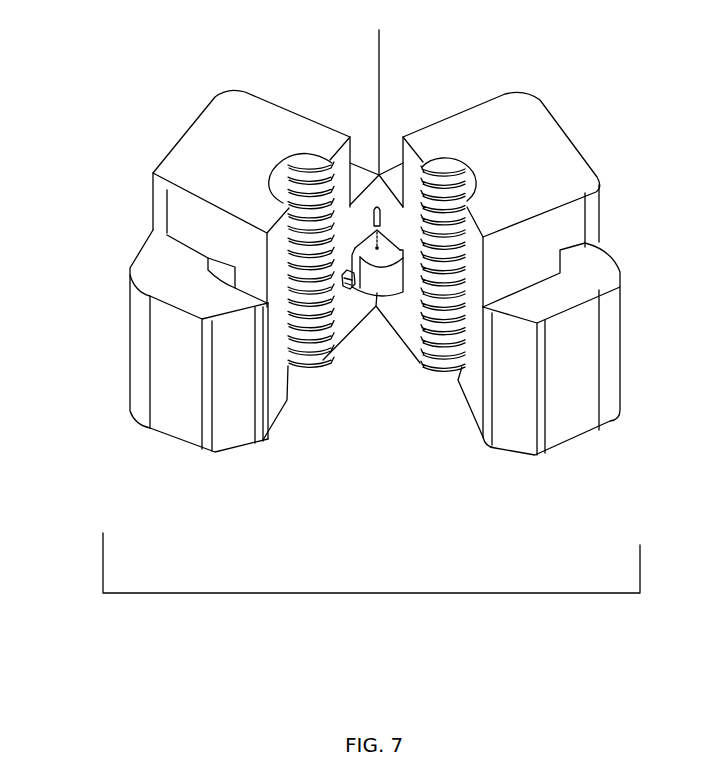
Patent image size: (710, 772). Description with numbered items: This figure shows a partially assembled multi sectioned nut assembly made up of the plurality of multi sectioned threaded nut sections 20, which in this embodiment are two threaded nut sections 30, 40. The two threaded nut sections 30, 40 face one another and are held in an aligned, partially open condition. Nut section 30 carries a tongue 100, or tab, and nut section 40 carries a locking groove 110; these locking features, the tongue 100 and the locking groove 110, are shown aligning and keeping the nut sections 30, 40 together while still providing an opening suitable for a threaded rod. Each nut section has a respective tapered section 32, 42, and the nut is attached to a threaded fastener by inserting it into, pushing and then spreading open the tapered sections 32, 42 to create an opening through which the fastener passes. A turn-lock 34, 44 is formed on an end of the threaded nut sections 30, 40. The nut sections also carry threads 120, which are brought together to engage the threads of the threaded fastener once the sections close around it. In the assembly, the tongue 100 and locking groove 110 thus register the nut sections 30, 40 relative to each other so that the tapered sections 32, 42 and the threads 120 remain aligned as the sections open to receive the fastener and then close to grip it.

The multi sectioned threaded nut sections 20 is at (370, 593).
The threaded nut section 30 is at (497, 148).
The tapered section 32 is at (512, 427).
The turn-lock 34 is at (563, 230).
The threaded nut section 40 is at (241, 149).
The tapered section 42 is at (228, 436).
The turn-lock 44 is at (185, 220).
The tongue 100 is at (352, 297).
The locking groove 110 is at (398, 101).
The threads 120 is at (312, 368).